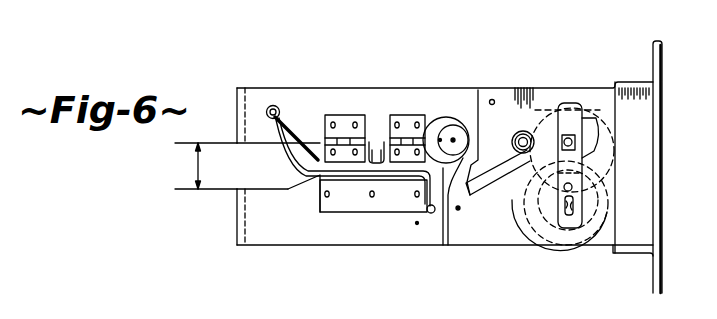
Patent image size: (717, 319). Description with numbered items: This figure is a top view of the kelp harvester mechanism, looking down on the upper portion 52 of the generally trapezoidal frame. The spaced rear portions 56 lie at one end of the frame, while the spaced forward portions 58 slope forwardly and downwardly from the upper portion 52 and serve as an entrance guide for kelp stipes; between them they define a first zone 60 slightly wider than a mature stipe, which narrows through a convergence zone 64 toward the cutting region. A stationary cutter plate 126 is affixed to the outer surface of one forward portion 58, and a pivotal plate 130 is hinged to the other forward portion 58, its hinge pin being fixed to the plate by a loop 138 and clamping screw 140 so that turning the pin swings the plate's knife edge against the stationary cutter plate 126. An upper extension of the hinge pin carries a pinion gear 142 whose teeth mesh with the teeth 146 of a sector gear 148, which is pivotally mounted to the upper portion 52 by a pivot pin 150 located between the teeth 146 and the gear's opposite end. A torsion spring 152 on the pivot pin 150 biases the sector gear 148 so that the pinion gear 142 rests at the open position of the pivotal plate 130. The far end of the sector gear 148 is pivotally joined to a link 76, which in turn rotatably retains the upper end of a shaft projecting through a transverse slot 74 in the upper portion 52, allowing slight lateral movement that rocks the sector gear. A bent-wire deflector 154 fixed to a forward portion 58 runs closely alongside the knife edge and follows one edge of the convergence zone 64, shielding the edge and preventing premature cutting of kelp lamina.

The upper portion 52 is at (503, 230).
The rear portions 56 is at (656, 56).
The forward portions 58 is at (292, 98).
The first zone 60 is at (202, 166).
The convergence zone 64 is at (300, 163).
The slot 74 is at (560, 238).
The link 76 is at (583, 210).
The stationary cutter plate 126 is at (394, 200).
The pivotal plate 130 is at (374, 140).
The loop 138 is at (384, 150).
The clamping screw 140 is at (363, 178).
The pinion gear 142 is at (446, 117).
The teeth 146 is at (450, 228).
The sector gear 148 is at (502, 113).
The pivot pin 150 is at (522, 135).
The torsion spring 152 is at (500, 127).
The deflector 154 is at (290, 158).